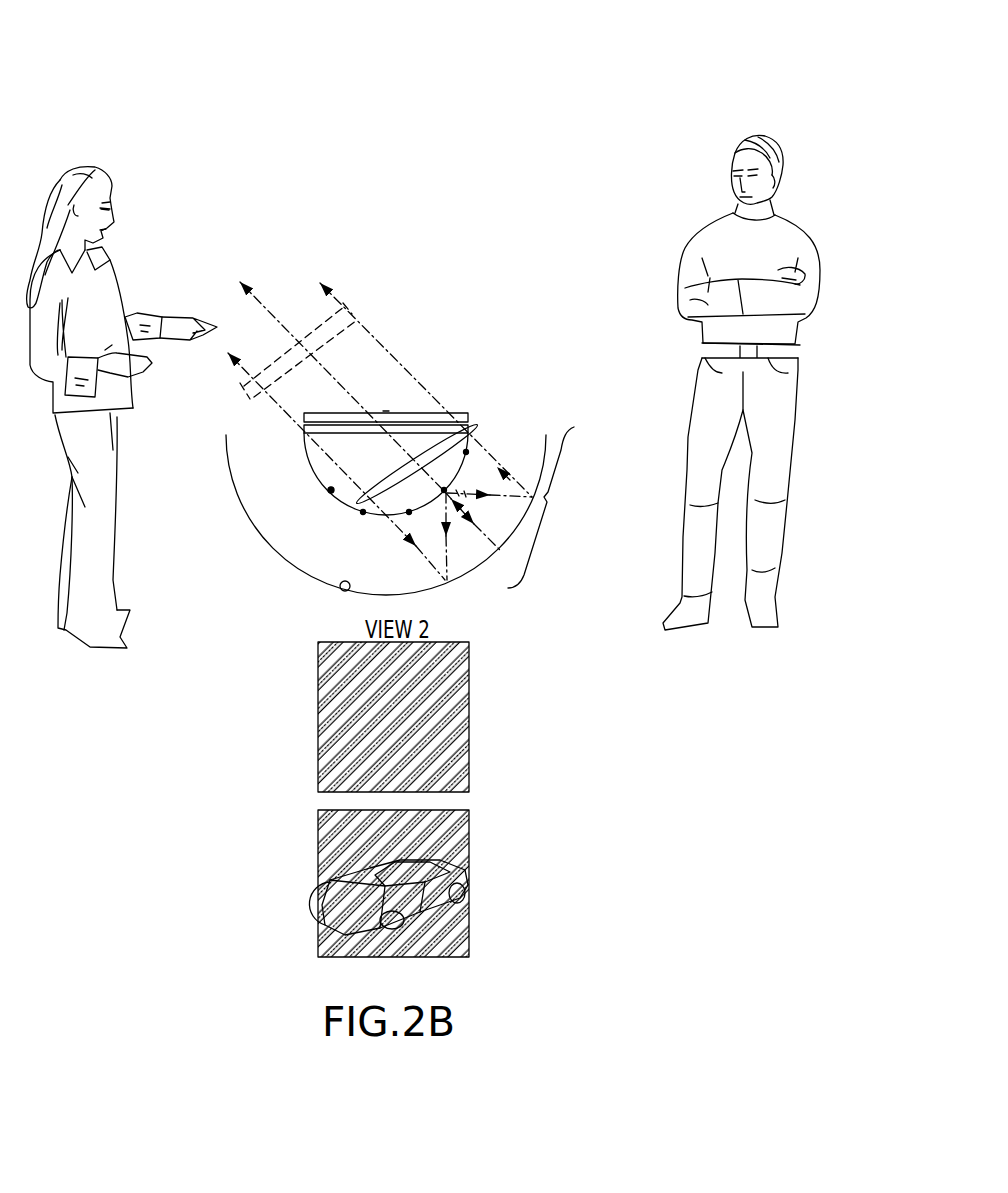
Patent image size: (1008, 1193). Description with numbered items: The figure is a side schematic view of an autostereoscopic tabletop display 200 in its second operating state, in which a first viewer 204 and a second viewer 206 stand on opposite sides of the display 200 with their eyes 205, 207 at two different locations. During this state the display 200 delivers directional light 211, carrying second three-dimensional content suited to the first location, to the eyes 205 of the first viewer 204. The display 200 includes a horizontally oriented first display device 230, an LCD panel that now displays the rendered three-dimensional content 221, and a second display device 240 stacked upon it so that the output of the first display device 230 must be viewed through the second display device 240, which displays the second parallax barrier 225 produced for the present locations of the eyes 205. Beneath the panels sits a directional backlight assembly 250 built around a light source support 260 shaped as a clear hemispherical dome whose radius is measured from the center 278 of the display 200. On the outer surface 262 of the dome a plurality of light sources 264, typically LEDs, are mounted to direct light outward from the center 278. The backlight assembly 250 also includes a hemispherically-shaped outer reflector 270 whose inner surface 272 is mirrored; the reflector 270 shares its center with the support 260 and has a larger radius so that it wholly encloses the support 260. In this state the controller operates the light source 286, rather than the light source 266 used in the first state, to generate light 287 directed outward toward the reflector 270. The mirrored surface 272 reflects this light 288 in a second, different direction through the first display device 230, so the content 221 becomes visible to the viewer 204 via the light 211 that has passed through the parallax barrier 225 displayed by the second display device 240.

The tabletop display 200 is at (437, 136).
The first viewer 204 is at (62, 146).
The eyes of first viewer 205 is at (118, 210).
The second viewer 206 is at (742, 130).
The eyes of second viewer 207 is at (727, 176).
The light 211 is at (361, 306).
The center of display 278 is at (396, 406).
The second display device 240 is at (462, 412).
The first display device 230 is at (470, 428).
The light source support 260 is at (298, 438).
The outer surface of dome 262 is at (340, 499).
The light sources 264 is at (308, 458).
The light source/LED 266 is at (329, 492).
The light source/LED 286 is at (442, 488).
The light 287 is at (443, 506).
The reflected light 288 is at (344, 505).
The directional backlight assembly 250 is at (586, 507).
The hemispherically-shaped outer reflector 270 is at (290, 584).
The inner surface 272 is at (343, 592).
The second parallax barrier 225 is at (476, 722).
The 3D content 221 is at (484, 850).